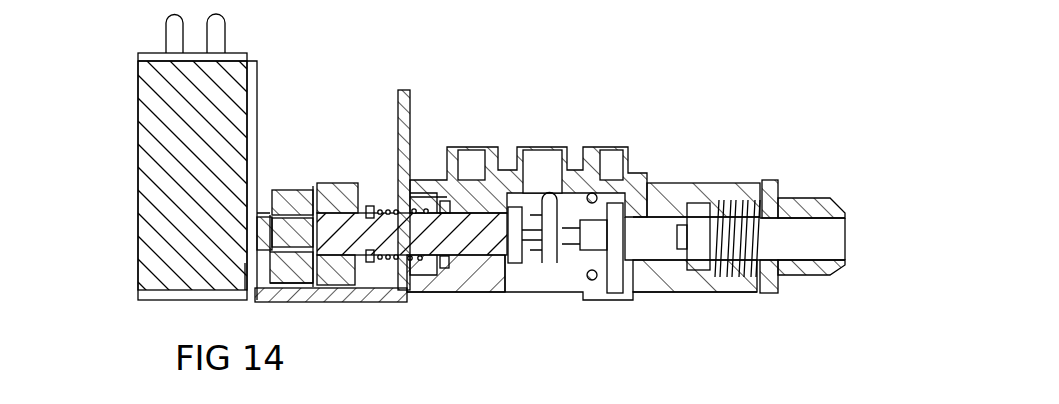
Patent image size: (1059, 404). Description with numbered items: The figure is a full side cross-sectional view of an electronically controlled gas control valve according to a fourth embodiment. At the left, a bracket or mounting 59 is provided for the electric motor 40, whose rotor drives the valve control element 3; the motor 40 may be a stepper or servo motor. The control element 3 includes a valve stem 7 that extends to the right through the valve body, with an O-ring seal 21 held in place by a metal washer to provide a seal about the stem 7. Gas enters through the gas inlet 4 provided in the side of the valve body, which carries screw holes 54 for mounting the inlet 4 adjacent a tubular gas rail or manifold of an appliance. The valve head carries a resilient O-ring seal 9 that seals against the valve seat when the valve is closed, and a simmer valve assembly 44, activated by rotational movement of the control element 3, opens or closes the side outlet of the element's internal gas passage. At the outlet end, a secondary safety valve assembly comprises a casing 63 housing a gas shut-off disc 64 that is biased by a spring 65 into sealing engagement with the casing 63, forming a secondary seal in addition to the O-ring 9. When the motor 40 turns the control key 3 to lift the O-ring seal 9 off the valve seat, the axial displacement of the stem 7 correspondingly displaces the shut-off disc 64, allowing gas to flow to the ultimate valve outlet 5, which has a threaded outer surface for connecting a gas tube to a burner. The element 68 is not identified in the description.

The solenoid coil block 68 is at (150, 113).
The electric motor 40 is at (285, 190).
The valve control element 3 is at (371, 186).
The valve stem 7 is at (487, 230).
The O-ring seal 21 is at (445, 267).
The bracket or mounting 59 is at (412, 100).
The screw holes 54 is at (477, 157).
The gas inlet 4 is at (538, 147).
The simmer valve assembly 44 is at (547, 264).
The O-ring seal 9 is at (597, 292).
The casing 63 is at (753, 150).
The gas shut-off disc 64 is at (702, 213).
The spring 65 is at (715, 279).
The gas outlet 5 is at (795, 252).